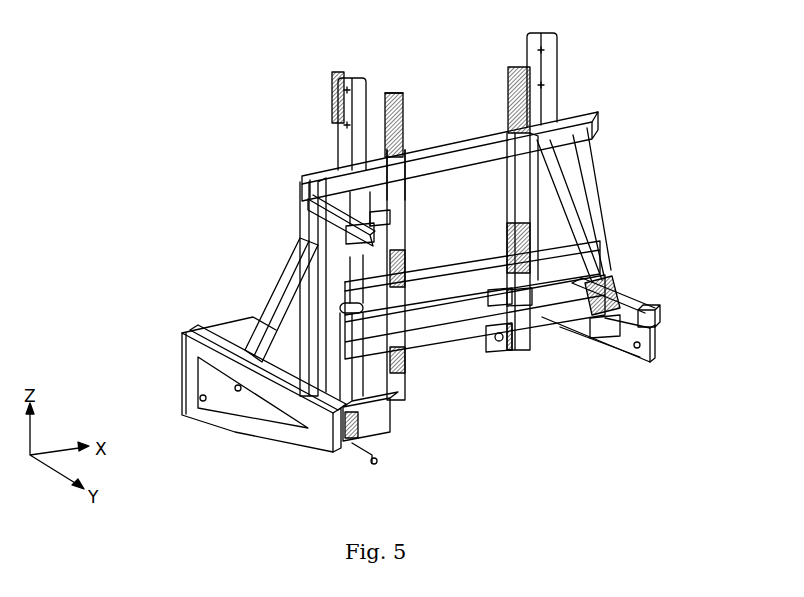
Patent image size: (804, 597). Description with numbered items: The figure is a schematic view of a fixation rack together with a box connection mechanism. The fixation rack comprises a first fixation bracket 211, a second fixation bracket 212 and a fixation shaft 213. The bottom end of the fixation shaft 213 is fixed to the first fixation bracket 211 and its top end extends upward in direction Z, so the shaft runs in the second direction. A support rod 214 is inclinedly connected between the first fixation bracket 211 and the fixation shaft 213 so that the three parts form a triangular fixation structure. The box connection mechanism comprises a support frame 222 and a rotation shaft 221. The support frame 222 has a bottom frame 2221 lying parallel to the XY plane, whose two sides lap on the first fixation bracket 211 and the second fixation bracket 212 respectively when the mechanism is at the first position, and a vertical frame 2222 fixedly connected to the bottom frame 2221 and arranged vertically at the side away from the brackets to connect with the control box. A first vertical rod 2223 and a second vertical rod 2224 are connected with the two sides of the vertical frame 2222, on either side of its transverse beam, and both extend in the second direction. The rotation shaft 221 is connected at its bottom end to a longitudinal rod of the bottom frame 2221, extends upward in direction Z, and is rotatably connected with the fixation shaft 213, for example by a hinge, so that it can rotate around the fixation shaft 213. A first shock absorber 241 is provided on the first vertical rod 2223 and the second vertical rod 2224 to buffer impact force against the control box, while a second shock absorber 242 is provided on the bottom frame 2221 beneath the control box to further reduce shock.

The first fixation bracket 211 is at (273, 442).
The second fixation bracket 212 is at (608, 352).
The fixation shaft 213 is at (337, 337).
The support rod 214 is at (287, 305).
The rotation shaft 221 is at (385, 247).
The support frame 222 is at (321, 201).
The bottom frame 2221 is at (477, 330).
The vertical frame 2222 is at (303, 240).
The first vertical rod 2223 is at (513, 140).
The second vertical rod 2224 is at (352, 107).
The first shock absorber 241 is at (405, 113).
The second shock absorber 242 is at (605, 293).